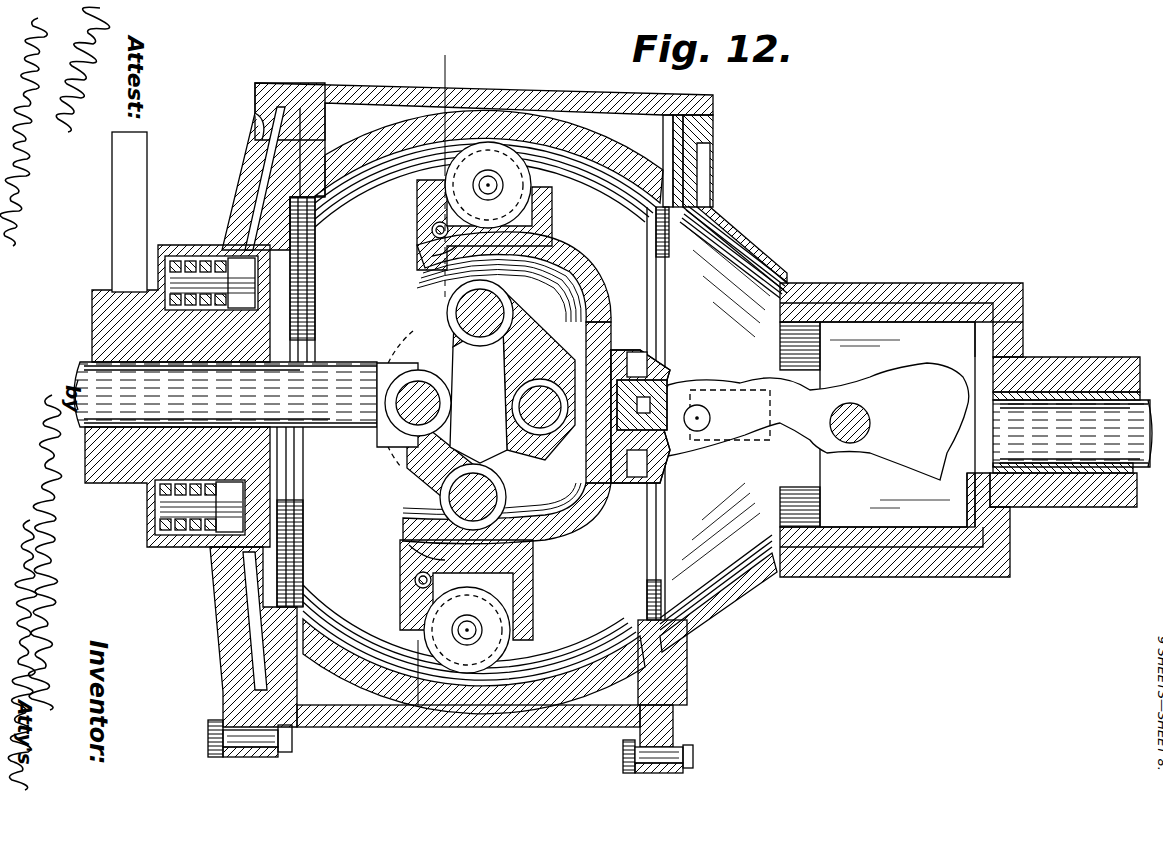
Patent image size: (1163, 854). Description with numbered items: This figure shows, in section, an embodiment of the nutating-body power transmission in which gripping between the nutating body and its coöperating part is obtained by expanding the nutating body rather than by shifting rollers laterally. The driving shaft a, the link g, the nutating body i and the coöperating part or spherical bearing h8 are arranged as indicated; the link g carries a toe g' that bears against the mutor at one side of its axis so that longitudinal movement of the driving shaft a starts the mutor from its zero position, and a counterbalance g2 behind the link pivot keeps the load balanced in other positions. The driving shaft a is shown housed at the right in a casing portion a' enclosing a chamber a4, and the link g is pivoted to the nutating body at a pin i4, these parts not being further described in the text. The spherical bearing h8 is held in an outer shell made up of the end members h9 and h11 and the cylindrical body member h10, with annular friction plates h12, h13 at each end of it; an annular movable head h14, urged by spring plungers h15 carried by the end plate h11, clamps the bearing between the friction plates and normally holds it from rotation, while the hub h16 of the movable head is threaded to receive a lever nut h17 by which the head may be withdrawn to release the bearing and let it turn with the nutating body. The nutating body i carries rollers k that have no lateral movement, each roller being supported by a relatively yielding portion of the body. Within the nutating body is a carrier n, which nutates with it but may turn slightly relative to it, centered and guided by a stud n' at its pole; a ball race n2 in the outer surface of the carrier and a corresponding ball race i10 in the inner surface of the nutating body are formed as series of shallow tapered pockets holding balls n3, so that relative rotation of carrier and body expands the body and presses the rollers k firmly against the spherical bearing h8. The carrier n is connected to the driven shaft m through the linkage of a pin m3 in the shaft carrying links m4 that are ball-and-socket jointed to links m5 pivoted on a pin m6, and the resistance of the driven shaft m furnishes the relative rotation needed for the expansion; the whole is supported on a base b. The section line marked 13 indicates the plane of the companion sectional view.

The driving shaft a is at (1072, 433).
The cylinder casing a' is at (960, 430).
The cylinder chamber a4 is at (897, 424).
The base and frame b is at (945, 575).
The link g is at (815, 421).
The toe g' is at (730, 392).
The counterbalance g2 is at (878, 422).
The spherical bearing h8 is at (615, 172).
The end member h9 is at (723, 429).
The cylindrical body member h10 is at (565, 80).
The end plate h11 is at (272, 190).
The annular friction plate h12 is at (687, 167).
The annular friction plate h13 is at (300, 150).
The annular movable head h14 is at (262, 222).
The spring plungers h15 is at (172, 250).
The hub h16 is at (270, 340).
The lever nut h17 is at (120, 268).
The nutating body i is at (594, 290).
The pin i4 is at (700, 424).
The ball race i10 is at (400, 608).
The rollers k is at (522, 647).
The driven shaft m is at (225, 394).
The pin m3 is at (405, 418).
The links m4 is at (447, 313).
The links m5 is at (443, 397).
The pin m6 is at (538, 432).
The carrier n is at (507, 388).
The stud n' is at (659, 380).
The ball race n2 is at (420, 572).
The ball n3 is at (432, 231).
The section line 13 is at (432, 122).